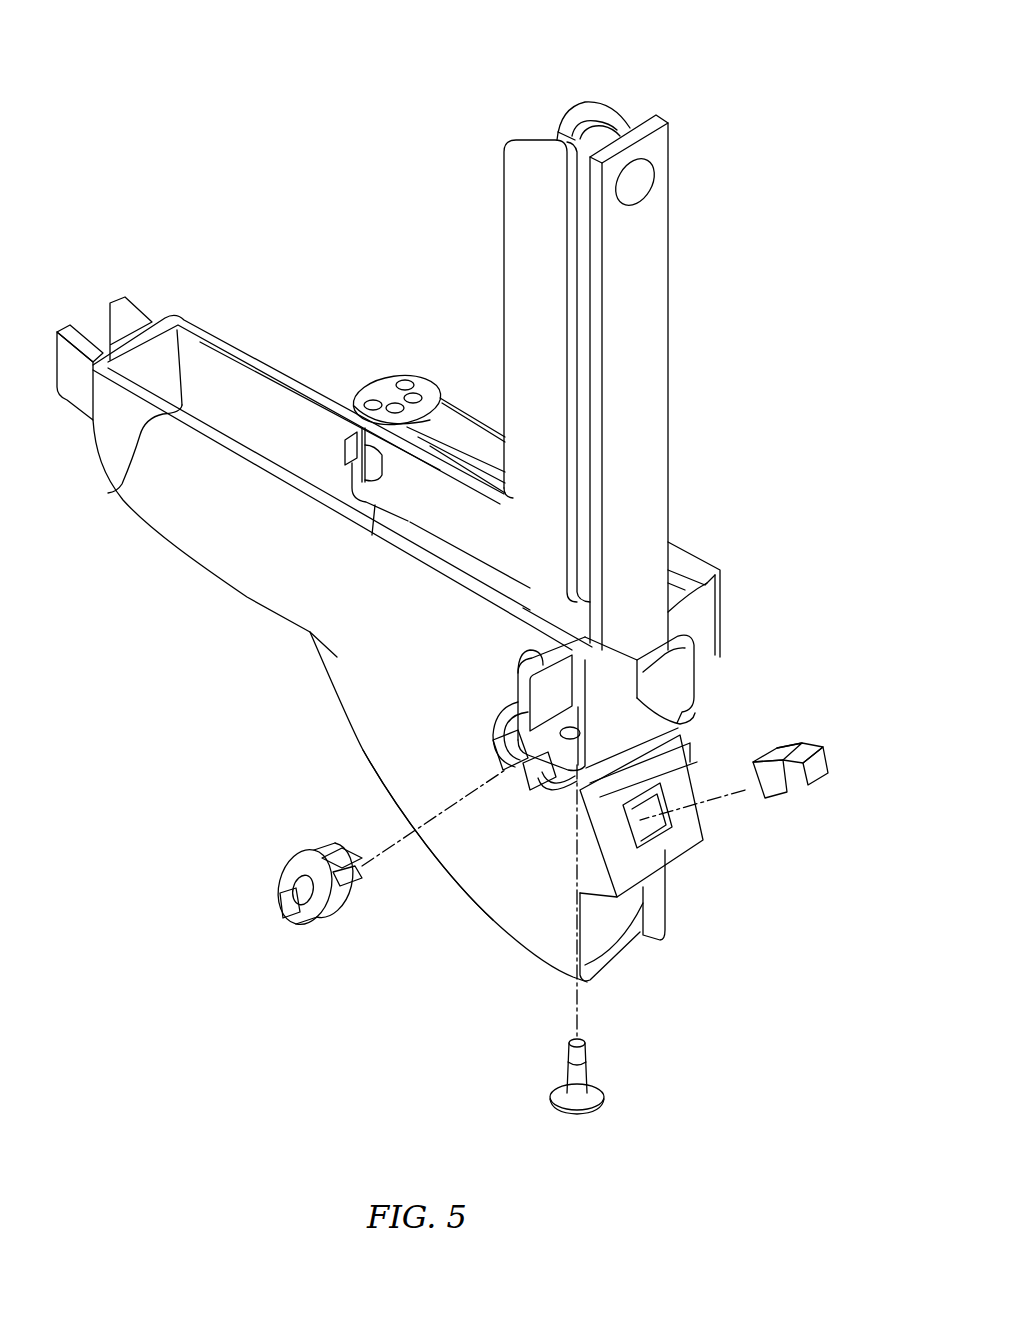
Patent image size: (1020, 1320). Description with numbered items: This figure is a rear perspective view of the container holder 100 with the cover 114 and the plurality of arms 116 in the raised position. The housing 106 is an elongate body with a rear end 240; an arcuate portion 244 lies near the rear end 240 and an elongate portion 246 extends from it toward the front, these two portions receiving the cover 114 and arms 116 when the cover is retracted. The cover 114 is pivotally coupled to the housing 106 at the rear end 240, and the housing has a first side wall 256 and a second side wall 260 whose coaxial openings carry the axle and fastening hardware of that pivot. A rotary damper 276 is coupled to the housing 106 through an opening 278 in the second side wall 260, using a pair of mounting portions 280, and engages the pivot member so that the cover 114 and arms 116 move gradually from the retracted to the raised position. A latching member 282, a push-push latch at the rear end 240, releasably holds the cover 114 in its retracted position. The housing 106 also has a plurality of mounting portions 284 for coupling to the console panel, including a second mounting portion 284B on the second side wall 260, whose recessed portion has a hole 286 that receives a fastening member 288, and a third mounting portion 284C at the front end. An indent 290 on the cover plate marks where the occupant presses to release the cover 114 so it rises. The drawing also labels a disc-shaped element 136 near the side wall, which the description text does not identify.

The container holder 100 is at (322, 116).
The housing 106 is at (239, 293).
The cover 114 is at (680, 150).
The plurality of arms 116 is at (592, 92).
The adjustment disk 136 is at (395, 376).
The rear end 240 is at (750, 675).
The arcuate portion 244 is at (455, 888).
The elongate portion 246 is at (187, 557).
The first side wall 256 is at (288, 364).
The second side wall 260 is at (108, 493).
The rotary damper 276 is at (280, 858).
The opening 278 is at (533, 795).
The pair of mounting portions 280 is at (342, 847).
The latching member 282 is at (820, 758).
The plurality of mounting portions 284 is at (57, 322).
The second mounting portion 284B is at (680, 723).
The third mounting portion 284C is at (128, 298).
The hole 286 is at (570, 790).
The fastening member 288 is at (565, 1072).
The indent 290 is at (653, 196).